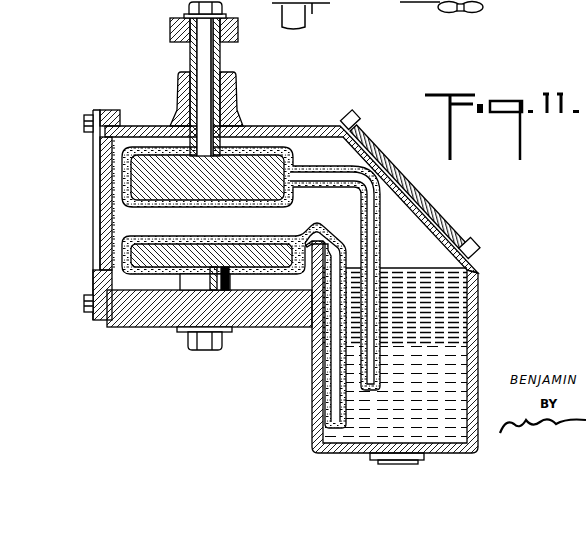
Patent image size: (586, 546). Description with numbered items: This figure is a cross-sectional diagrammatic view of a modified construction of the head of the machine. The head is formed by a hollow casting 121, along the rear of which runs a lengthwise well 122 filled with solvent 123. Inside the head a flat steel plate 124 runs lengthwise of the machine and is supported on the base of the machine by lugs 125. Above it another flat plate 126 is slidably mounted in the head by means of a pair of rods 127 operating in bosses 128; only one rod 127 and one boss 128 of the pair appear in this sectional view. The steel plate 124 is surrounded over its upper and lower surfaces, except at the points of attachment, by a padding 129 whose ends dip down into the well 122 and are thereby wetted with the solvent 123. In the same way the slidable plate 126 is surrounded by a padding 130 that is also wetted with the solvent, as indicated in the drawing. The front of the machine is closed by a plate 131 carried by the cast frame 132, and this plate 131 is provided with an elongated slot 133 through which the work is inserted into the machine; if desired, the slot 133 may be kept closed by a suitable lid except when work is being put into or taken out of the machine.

The hollow casting 121 is at (292, 126).
The well 122 is at (338, 434).
The solvent 123 is at (478, 283).
The flat steel plate 124 is at (142, 265).
The lugs 125 is at (230, 290).
The flat plate 126 is at (138, 161).
The rods 127 is at (202, 53).
The bosses 128 is at (190, 73).
The padding 129 is at (128, 241).
The padding 130 is at (125, 188).
The plate 131 is at (110, 254).
The cast frame 132 is at (96, 278).
The elongated slot 133 is at (107, 219).